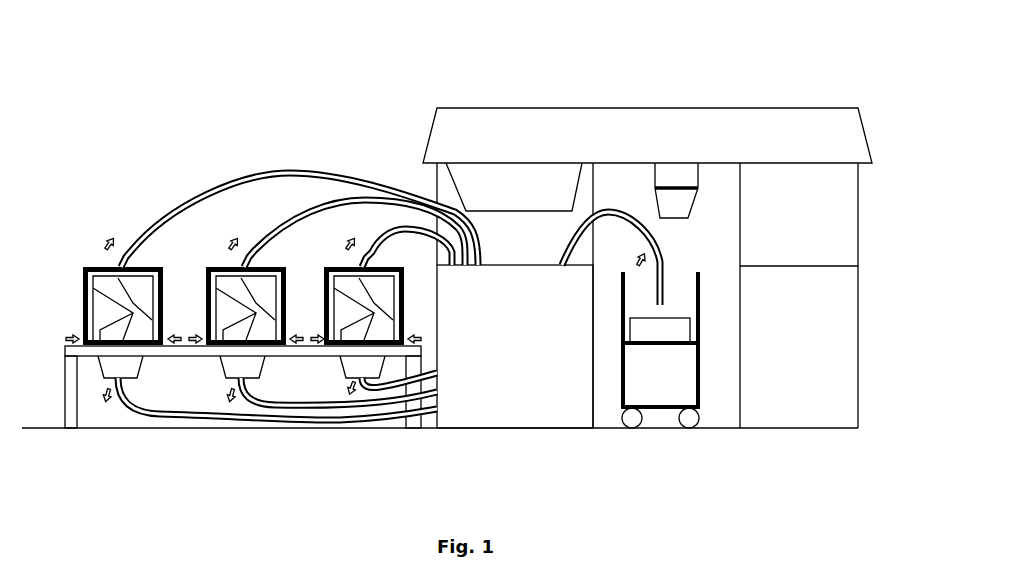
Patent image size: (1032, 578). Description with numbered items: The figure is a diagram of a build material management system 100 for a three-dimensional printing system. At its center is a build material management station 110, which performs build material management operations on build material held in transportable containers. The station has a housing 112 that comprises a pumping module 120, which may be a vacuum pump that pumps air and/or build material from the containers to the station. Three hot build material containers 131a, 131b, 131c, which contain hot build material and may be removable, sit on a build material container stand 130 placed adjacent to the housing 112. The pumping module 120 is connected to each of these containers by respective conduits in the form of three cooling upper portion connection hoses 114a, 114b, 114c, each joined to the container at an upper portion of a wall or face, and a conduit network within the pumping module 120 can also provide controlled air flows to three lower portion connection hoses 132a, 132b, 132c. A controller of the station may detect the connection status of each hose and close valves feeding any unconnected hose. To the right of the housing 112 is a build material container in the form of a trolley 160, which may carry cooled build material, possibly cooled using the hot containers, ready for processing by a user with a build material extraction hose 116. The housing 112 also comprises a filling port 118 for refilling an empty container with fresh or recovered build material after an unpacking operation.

The build material management system 100 is at (243, 70).
The build material management station 110 is at (606, 78).
The housing 112 is at (435, 110).
The cooling upper portion connection hose 114a is at (392, 230).
The cooling upper portion connection hose 114b is at (308, 217).
The cooling upper portion connection hose 114c is at (182, 213).
The build material extraction hose 116 is at (655, 243).
The filling port 118 is at (697, 193).
The pumping module 120 is at (512, 430).
The build material container stand 130 is at (65, 377).
The hot build material container 131a is at (315, 313).
The hot build material container 131b is at (203, 313).
The hot build material container 131c is at (83, 277).
The lower portion connection hose 132a is at (367, 382).
The lower portion connection hose 132b is at (258, 413).
The lower portion connection hose 132c is at (135, 413).
The trolley 160 is at (700, 382).